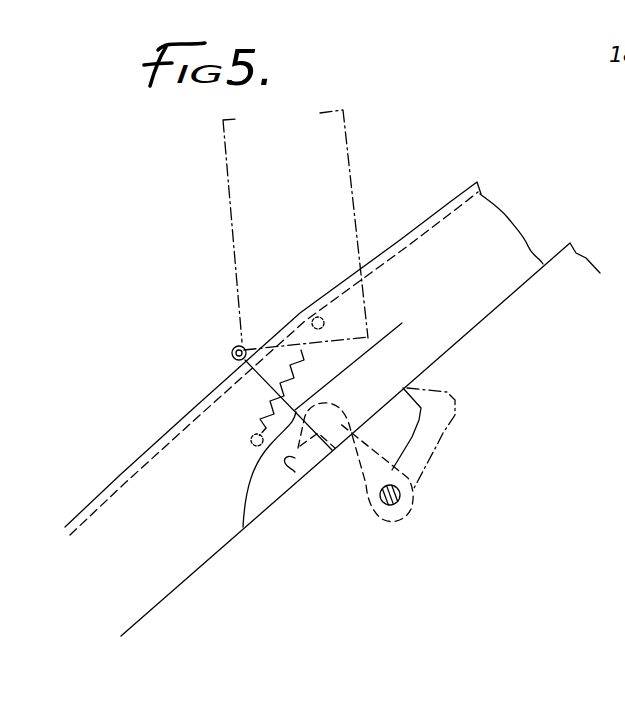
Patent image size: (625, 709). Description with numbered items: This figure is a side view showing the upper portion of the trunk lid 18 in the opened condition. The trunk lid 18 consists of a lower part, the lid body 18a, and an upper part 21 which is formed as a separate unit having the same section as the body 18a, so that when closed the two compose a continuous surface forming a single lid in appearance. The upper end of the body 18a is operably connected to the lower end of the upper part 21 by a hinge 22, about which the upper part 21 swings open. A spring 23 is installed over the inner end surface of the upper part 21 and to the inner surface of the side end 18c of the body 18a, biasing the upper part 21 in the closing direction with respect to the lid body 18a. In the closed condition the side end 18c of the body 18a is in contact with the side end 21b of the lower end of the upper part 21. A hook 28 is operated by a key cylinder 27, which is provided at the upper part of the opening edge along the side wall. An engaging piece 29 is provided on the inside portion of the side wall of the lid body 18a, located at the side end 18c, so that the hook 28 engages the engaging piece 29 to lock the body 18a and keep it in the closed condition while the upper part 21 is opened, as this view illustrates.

The trunk lid 18 is at (99, 497).
The lid body 18a is at (157, 440).
The side end 18c is at (409, 319).
The upper part 21 is at (476, 218).
The side end 21b is at (266, 498).
The hinge 22 is at (232, 351).
The spring 23 is at (301, 352).
The key cylinder 27 is at (400, 494).
The hook 28 is at (373, 448).
The engaging piece 29 is at (291, 470).